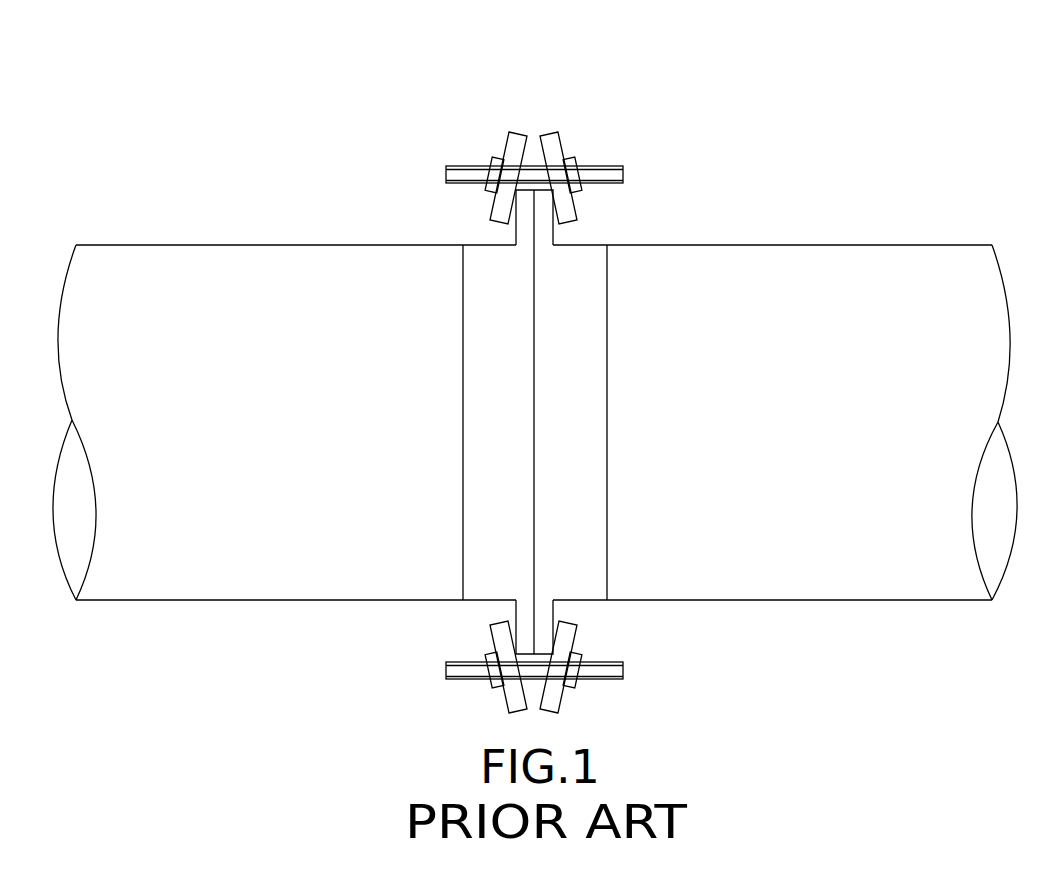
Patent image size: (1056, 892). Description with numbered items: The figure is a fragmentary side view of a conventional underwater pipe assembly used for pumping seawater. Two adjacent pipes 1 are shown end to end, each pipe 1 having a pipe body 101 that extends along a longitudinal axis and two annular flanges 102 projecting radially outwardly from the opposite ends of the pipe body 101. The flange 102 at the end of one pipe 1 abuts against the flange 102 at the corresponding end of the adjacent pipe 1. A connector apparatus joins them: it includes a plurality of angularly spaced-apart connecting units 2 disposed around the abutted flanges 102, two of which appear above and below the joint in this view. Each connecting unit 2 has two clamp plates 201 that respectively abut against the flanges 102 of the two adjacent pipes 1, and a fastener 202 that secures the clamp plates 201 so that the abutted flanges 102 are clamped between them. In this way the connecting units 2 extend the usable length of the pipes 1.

The pipe 1 is at (237, 245).
The pipe body 101 is at (330, 267).
The annular flange 102 is at (530, 205).
The connecting unit 2 is at (570, 369).
The clamp plate 201 is at (515, 147).
The fastener 202 is at (597, 173).